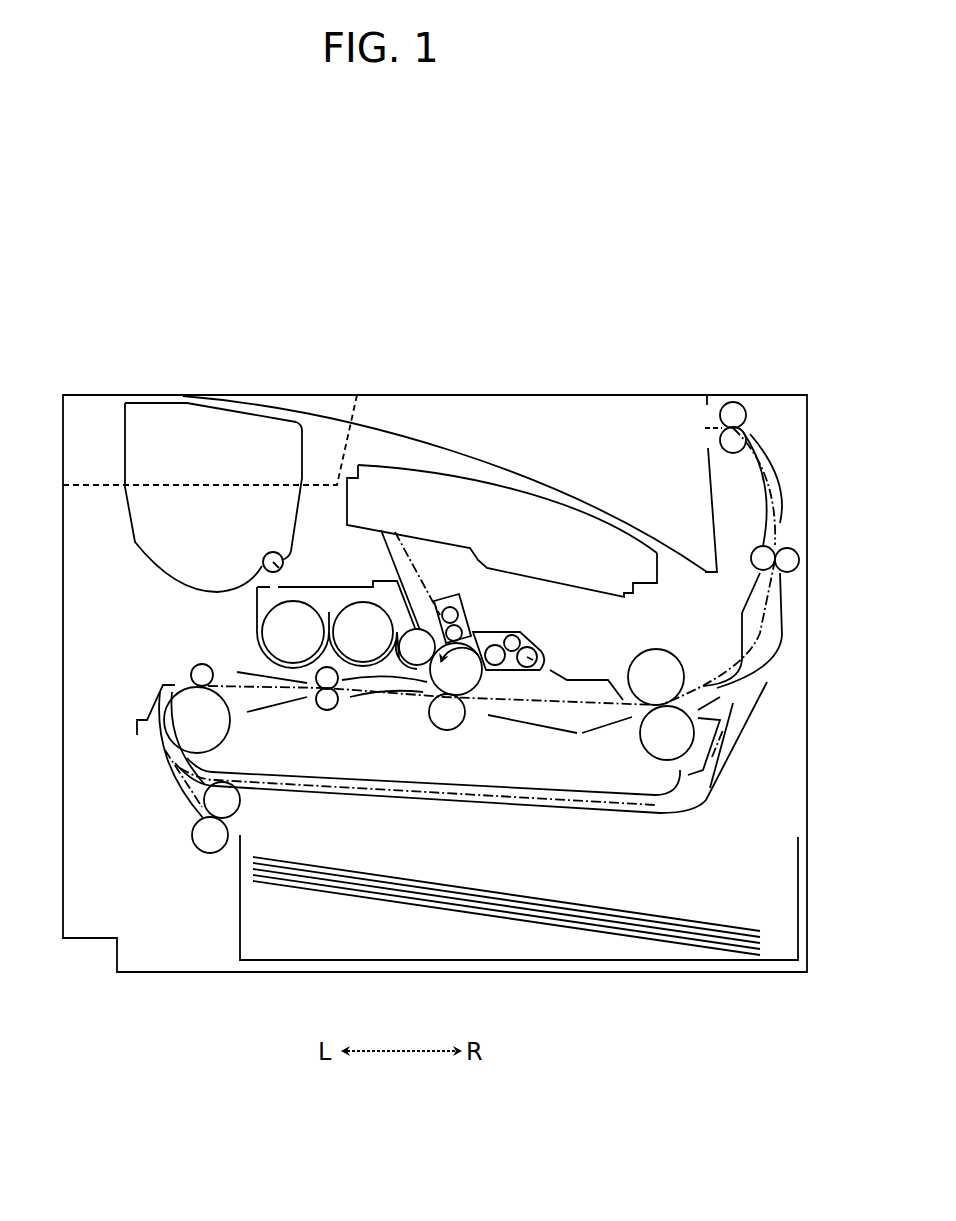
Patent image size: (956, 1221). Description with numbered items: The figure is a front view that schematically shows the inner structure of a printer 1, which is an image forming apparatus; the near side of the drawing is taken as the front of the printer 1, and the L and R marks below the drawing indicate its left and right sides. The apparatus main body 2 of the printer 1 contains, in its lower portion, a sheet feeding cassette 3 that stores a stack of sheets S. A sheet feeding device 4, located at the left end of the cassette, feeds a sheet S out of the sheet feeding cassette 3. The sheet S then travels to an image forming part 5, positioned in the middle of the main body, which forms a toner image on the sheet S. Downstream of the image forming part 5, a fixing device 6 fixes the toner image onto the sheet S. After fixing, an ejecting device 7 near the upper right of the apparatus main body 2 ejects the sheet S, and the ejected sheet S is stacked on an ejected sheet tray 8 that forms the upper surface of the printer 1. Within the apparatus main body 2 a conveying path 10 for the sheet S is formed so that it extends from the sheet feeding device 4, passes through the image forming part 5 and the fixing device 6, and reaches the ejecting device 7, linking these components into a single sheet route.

The printer 1 is at (282, 192).
The apparatus main body 2 is at (107, 392).
The sheet feeding cassette 3 is at (240, 882).
The sheet feeding device 4 is at (182, 824).
The image forming part 5 is at (384, 712).
The fixing device 6 is at (622, 668).
The ejecting device 7 is at (689, 414).
The ejected sheet tray 8 is at (552, 483).
The conveying path 10 is at (747, 604).
The sheet S is at (585, 905).